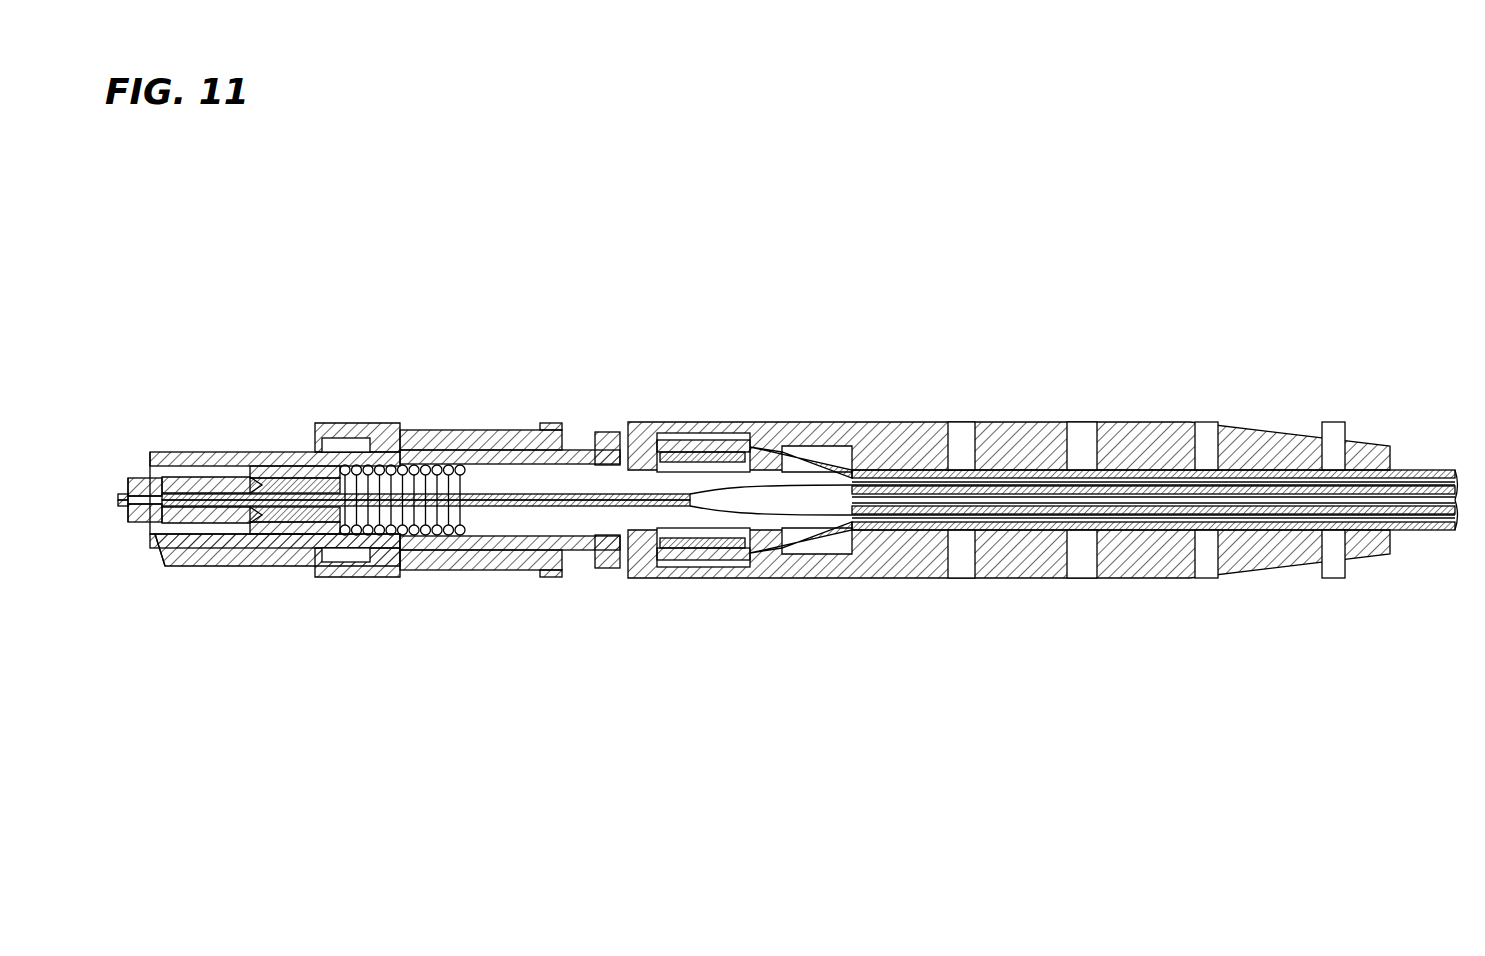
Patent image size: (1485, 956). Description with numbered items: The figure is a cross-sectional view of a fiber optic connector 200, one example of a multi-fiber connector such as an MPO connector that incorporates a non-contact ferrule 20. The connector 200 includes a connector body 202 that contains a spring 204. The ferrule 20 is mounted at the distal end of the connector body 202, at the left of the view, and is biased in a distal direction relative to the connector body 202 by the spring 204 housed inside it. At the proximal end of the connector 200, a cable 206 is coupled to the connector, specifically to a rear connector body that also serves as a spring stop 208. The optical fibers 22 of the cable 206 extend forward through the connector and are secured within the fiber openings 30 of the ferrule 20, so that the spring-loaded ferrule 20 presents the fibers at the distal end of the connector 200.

The fiber optic connector 200 is at (752, 316).
The connector body 202 is at (274, 566).
The spring 204 is at (432, 465).
The cable 206 is at (1414, 470).
The rear connector body/spring stop 208 is at (627, 462).
The ferrule 20 is at (140, 478).
The optical fibers 22 is at (190, 470).
The fiber openings 30 is at (158, 540).